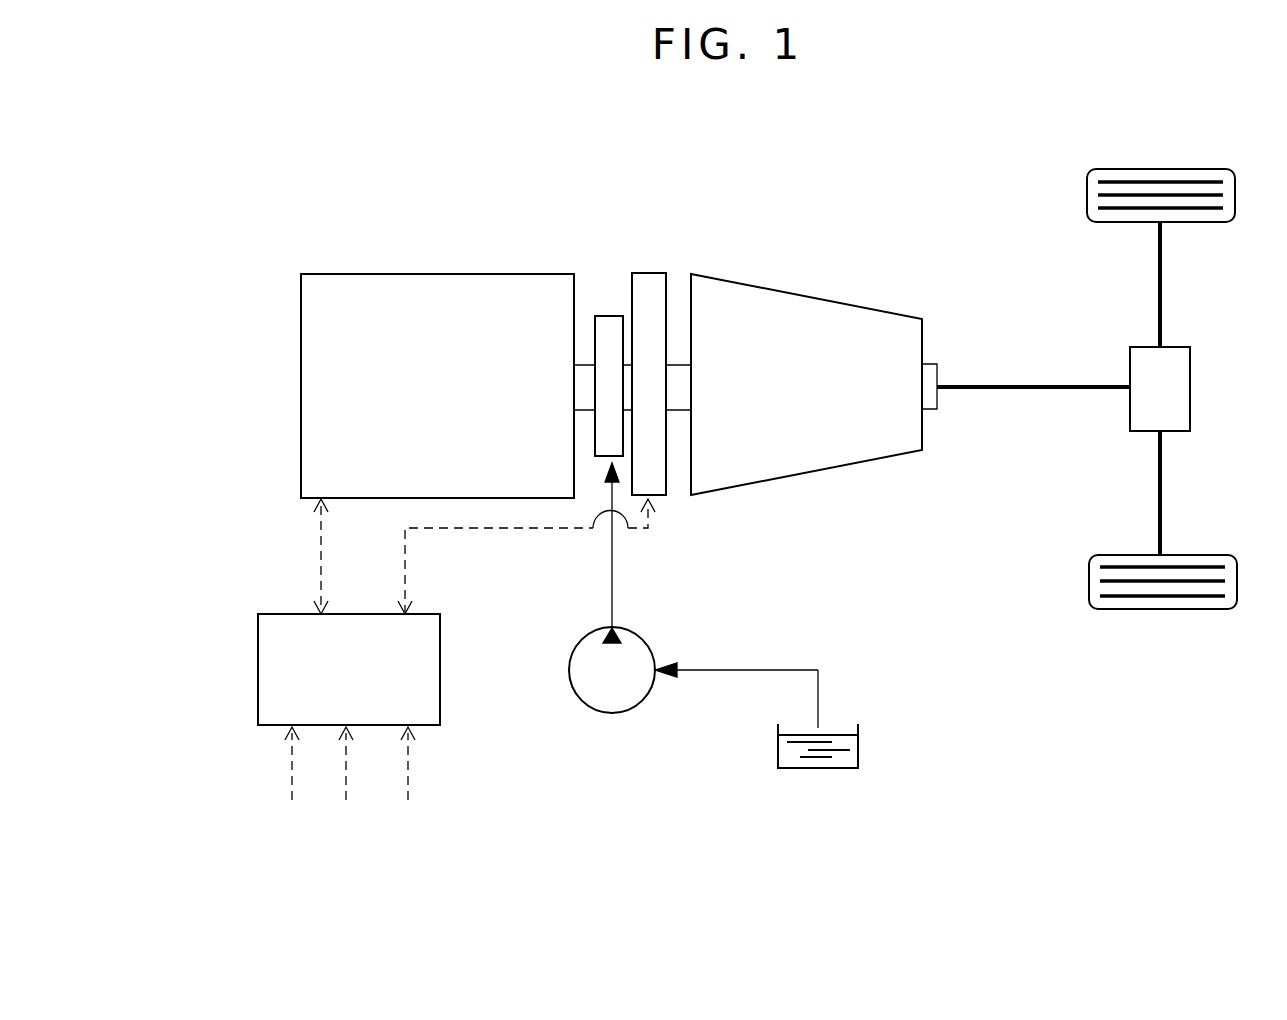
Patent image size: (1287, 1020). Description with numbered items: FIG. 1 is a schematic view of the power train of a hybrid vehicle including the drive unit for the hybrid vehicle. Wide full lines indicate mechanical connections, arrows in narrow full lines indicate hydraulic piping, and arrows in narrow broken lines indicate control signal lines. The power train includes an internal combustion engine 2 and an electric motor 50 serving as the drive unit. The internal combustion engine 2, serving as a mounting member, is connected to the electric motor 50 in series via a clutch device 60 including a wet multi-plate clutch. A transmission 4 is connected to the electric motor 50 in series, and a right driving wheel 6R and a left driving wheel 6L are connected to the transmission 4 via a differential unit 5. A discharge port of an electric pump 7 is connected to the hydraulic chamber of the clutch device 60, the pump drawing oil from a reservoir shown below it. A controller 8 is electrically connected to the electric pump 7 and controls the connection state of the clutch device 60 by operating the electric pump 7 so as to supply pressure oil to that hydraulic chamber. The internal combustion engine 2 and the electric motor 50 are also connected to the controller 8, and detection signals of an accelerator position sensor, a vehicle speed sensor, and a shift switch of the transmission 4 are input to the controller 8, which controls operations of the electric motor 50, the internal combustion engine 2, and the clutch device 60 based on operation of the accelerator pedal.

The internal combustion engine 2 is at (431, 272).
The clutch device 60 is at (607, 313).
The electric motor 50 is at (650, 272).
The transmission 4 is at (809, 295).
The differential unit 5 is at (1130, 350).
The right driving wheel 6R is at (1172, 168).
The left driving wheel 6L is at (1152, 611).
The electric pump 7 is at (612, 714).
The controller 8 is at (258, 660).